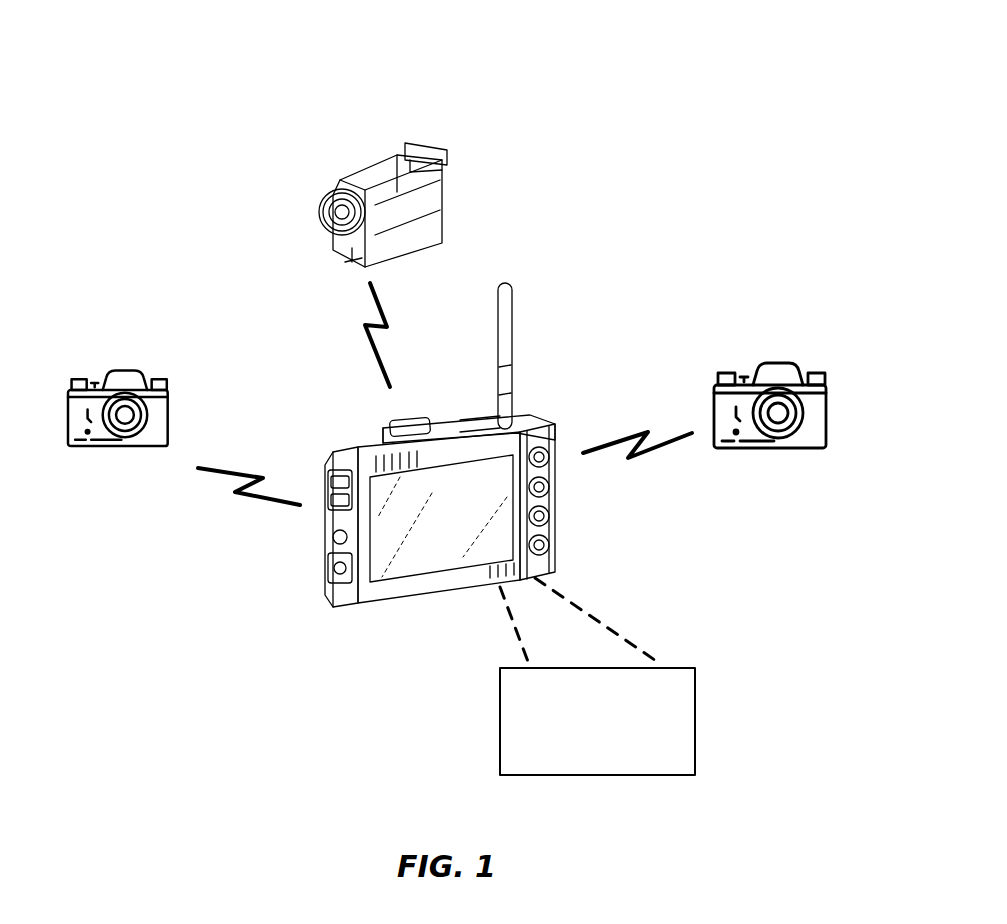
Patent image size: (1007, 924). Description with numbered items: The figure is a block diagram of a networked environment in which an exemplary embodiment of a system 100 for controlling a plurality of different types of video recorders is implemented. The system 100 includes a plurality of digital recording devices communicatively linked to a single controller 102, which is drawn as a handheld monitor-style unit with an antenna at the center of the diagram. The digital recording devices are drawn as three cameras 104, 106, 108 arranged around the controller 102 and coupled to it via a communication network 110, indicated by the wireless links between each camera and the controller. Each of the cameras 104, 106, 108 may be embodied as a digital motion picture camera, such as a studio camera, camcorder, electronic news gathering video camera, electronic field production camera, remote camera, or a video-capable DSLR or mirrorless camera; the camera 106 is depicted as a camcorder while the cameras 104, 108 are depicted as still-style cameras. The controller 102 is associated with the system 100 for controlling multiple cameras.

The system 100 is at (597, 721).
The controller 102 is at (378, 602).
The camera 104 is at (126, 370).
The camera 106 is at (377, 177).
The camera 108 is at (784, 377).
The communication network 110 is at (640, 148).